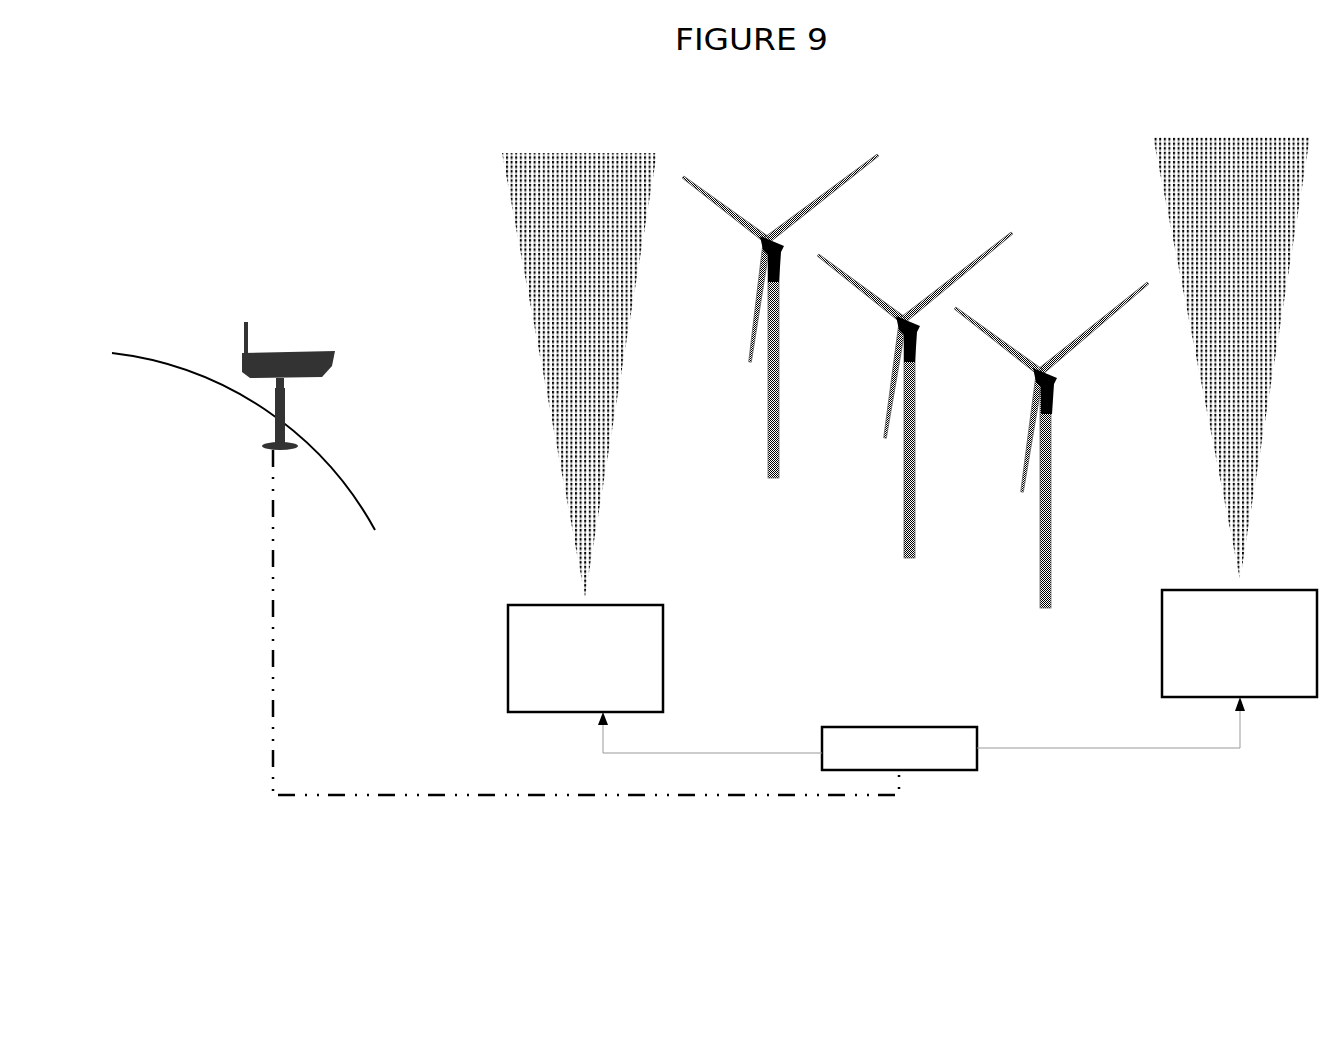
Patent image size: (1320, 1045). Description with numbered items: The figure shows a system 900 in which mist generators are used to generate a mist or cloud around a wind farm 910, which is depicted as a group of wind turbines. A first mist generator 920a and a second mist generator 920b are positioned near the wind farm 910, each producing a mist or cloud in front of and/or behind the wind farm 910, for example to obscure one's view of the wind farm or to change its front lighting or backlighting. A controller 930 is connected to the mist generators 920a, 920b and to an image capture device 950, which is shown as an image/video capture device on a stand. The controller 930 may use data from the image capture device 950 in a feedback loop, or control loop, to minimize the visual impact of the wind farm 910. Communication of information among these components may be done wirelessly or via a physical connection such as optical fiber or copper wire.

The system 900 is at (760, 81).
The wind farm 910 is at (949, 185).
The mist generator 920a is at (508, 662).
The mist generator 920b is at (1162, 650).
The controller 930 is at (888, 727).
The image capture device 950 is at (290, 335).